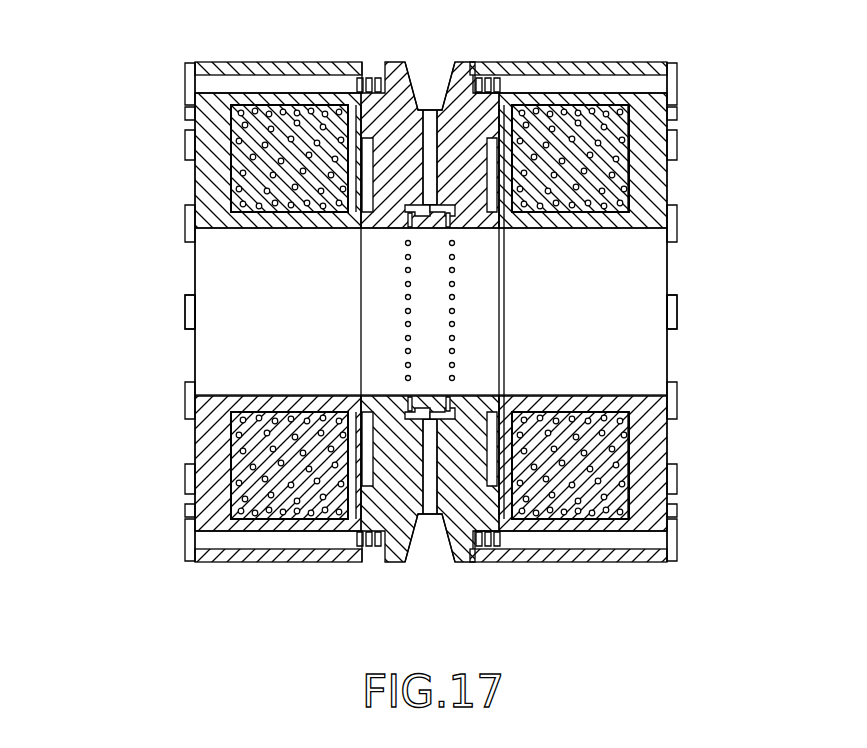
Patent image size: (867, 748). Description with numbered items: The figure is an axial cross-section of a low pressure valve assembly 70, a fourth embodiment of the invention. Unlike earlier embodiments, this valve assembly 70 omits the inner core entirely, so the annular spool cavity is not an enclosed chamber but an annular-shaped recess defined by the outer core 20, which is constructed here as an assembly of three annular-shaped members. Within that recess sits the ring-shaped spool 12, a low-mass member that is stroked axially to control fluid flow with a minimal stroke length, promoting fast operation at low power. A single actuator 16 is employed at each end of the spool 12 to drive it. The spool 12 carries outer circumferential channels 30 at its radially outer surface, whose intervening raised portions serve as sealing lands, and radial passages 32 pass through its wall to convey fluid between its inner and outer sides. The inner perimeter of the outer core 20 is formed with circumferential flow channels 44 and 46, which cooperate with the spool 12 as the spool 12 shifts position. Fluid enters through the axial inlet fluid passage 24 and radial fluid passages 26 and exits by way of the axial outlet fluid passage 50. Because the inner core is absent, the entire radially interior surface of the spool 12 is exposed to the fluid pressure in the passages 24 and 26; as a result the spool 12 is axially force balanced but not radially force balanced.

The low pressure valve assembly 70 is at (157, 127).
The outer core 20 is at (653, 122).
The actuator 16 is at (302, 106).
The axial outlet fluid passage 50 is at (429, 118).
The spool 12 is at (500, 228).
The circumferential flow channel 44 is at (420, 206).
The circumferential flow channel 46 is at (438, 206).
The outer circumferential channel 30 is at (421, 229).
The radial passage 32 is at (455, 350).
The axial inlet fluid passage 24 is at (381, 311).
The radial fluid passage 26 is at (252, 343).